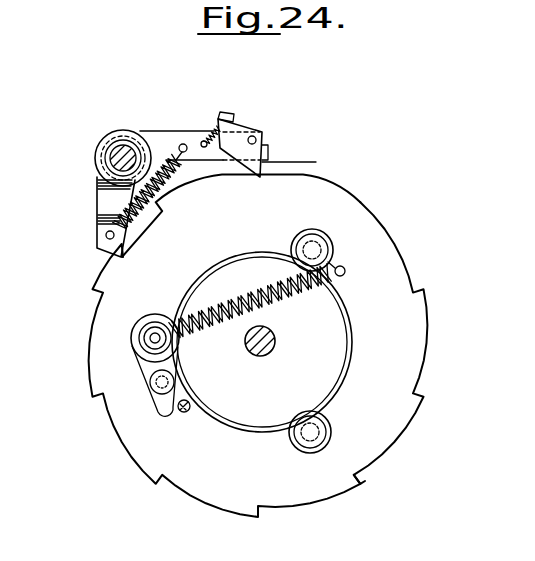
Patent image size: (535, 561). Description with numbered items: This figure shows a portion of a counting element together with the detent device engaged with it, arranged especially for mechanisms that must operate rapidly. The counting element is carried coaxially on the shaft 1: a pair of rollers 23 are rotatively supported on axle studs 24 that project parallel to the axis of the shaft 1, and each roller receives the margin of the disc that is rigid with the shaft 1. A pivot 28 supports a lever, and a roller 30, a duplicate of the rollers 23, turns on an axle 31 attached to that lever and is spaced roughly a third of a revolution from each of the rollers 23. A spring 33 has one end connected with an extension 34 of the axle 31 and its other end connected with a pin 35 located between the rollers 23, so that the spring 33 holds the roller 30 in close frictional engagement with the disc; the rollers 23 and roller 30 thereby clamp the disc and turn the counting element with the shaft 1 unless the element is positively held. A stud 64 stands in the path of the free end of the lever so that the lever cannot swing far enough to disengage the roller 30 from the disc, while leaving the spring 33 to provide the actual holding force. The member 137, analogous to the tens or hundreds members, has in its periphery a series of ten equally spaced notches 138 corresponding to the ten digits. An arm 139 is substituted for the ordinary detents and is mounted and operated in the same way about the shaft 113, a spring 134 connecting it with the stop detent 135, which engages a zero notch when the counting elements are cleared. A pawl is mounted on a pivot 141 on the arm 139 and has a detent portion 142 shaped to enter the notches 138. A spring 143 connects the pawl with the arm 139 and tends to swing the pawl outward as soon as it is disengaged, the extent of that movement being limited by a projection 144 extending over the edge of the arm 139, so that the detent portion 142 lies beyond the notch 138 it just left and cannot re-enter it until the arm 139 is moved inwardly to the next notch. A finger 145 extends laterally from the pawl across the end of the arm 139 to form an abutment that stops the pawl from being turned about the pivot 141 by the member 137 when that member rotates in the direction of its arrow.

The shaft 1 is at (271, 343).
The rollers 23 is at (331, 253).
The axle studs 24 is at (311, 249).
The pivot 28 is at (166, 383).
The roller 30 is at (152, 315).
The axle 31 is at (141, 336).
The spring 33 is at (238, 296).
The extension 34 is at (151, 341).
The pin 35 is at (345, 273).
The stud 64 is at (184, 412).
The shaft 113 is at (123, 150).
The spring 134 is at (167, 172).
The detent 135 is at (107, 198).
The portion of counting element 137 is at (430, 313).
The notches 138 is at (373, 465).
The arm 139 is at (161, 134).
The pivot 141 is at (261, 133).
The detent portion 142 is at (306, 162).
The spring 143 is at (213, 130).
The projection 144 is at (234, 118).
The finger 145 is at (269, 150).